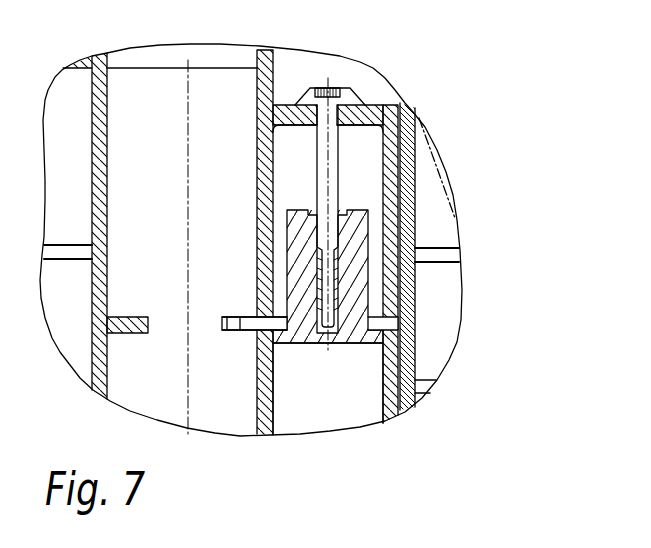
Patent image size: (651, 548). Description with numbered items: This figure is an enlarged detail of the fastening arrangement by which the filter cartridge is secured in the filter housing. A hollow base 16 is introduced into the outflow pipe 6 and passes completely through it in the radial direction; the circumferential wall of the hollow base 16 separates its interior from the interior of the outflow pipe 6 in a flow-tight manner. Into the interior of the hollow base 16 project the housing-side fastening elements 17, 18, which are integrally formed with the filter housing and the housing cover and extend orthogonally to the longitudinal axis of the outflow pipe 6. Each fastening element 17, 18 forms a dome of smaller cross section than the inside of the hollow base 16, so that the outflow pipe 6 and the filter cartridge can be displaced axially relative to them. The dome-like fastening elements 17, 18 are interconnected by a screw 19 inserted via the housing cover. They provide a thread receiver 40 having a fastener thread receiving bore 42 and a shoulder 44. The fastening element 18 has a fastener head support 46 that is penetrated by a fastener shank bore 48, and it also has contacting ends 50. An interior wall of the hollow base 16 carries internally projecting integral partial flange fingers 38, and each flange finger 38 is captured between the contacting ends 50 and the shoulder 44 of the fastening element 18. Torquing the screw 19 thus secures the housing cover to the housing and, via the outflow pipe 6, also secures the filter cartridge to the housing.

The outflow pipe 6 is at (79, 58).
The hollow base 16 is at (132, 80).
The fastening element 17 is at (273, 403).
The fastening element 18 is at (265, 70).
The screw 19 is at (333, 172).
The partial flange finger 38 is at (125, 317).
The thread receiver 40 is at (365, 240).
The fastener thread receiving bore 42 is at (334, 334).
The shoulder 44 is at (277, 322).
The fastener head support 46 is at (368, 108).
The fastener shank bore 48 is at (325, 124).
The contacting ends 50 is at (278, 305).